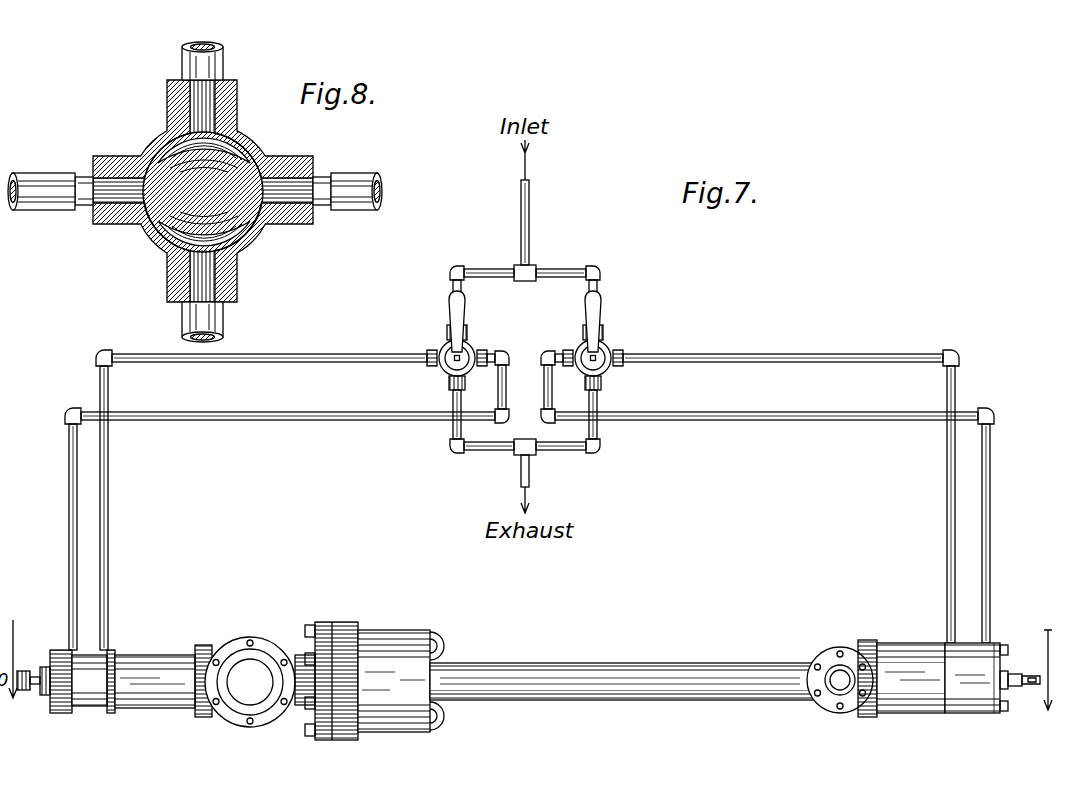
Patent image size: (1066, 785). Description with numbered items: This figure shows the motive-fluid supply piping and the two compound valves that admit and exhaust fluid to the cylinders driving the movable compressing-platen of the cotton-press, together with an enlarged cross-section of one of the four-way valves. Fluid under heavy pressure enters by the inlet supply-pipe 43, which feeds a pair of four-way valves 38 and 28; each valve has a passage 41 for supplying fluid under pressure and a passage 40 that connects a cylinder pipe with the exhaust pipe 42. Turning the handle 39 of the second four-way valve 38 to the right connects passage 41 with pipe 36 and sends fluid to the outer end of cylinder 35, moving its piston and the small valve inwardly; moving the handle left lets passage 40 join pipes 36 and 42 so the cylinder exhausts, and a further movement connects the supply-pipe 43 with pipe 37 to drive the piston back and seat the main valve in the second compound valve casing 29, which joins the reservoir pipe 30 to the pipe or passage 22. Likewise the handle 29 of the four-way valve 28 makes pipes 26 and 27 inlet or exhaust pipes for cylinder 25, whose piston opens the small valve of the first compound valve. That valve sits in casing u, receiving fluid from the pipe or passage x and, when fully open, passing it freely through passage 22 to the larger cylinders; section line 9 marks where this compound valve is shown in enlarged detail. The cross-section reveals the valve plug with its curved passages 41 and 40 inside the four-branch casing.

In FIG. 7, the supply-pipe 43 is at (529, 235).
In FIG. 7, the second four-way valve 38 is at (440, 345).
In FIG. 7, the four-way-valve handle 39 is at (467, 318).
In FIG. 8, the four-way valve 28 is at (148, 243).
In FIG. 7, the four-way valve 28 is at (606, 345).
In FIG. 7, the handle of four-way valve / second compound valve casing 29 is at (584, 318).
In FIG. 7, the exhaust pipe 42 is at (491, 451).
In FIG. 7, the supply and exhaust pipe 37 is at (308, 348).
In FIG. 7, the supply pipe 36 is at (302, 421).
In FIG. 7, the pipe 26 is at (862, 353).
In FIG. 7, the pipe 27 is at (830, 421).
In FIG. 7, the cylinder 35 is at (90, 713).
In FIG. 7, the pipe 30 is at (302, 655).
In FIG. 7, the pipe or passage 22 is at (492, 700).
In FIG. 7, the pipe or passage x is at (838, 678).
In FIG. 7, the valve casing u is at (845, 712).
In FIG. 7, the cylinder 25 is at (978, 697).
In FIG. 7, the section line 9 is at (1057, 677).
In FIG. 8, the passage 41 is at (168, 152).
In FIG. 8, the passage 40 is at (250, 234).